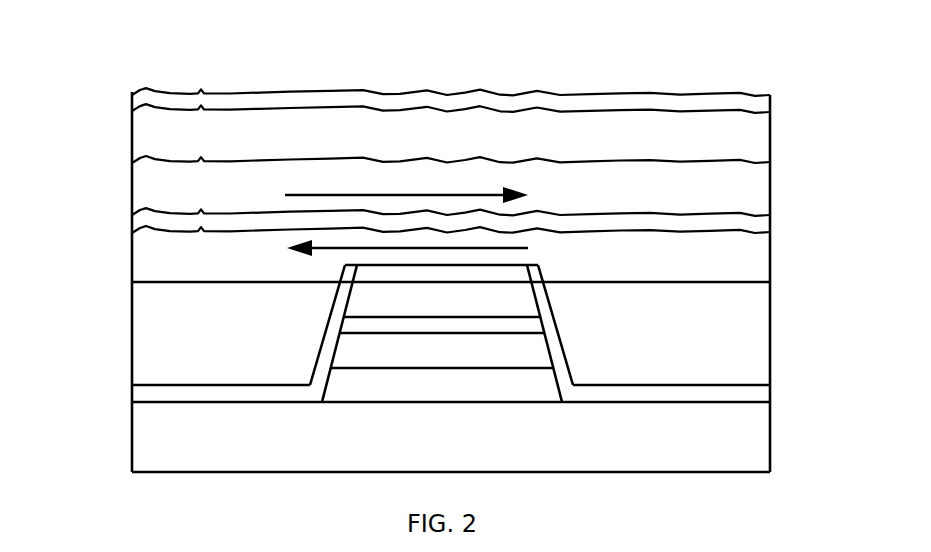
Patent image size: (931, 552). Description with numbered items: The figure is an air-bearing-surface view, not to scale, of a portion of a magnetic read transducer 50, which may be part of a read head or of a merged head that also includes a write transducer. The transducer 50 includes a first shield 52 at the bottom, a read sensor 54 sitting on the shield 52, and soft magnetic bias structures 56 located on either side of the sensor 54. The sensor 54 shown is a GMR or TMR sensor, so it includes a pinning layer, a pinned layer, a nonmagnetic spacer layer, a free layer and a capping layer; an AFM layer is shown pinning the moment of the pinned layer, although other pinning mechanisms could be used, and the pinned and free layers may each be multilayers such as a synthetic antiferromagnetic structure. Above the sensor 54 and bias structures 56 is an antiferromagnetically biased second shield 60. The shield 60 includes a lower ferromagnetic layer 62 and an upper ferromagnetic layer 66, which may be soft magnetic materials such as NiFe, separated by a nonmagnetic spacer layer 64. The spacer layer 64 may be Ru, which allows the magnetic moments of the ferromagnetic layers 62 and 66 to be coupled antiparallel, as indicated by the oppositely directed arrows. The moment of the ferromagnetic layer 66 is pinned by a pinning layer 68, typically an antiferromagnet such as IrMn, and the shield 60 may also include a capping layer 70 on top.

The magnetic read transducer 50 is at (427, 52).
The shield 52 is at (770, 438).
The read sensor 54 is at (512, 410).
The soft magnetic bias structures 56 is at (132, 350).
The antiferromagnetically biased second shield 60 is at (78, 196).
The ferromagnetic layer 62 is at (770, 265).
The nonmagnetic spacer layer 64 is at (132, 221).
The ferromagnetic layer 66 is at (770, 193).
The pinning layer 68 is at (132, 143).
The capping layer 70 is at (770, 98).